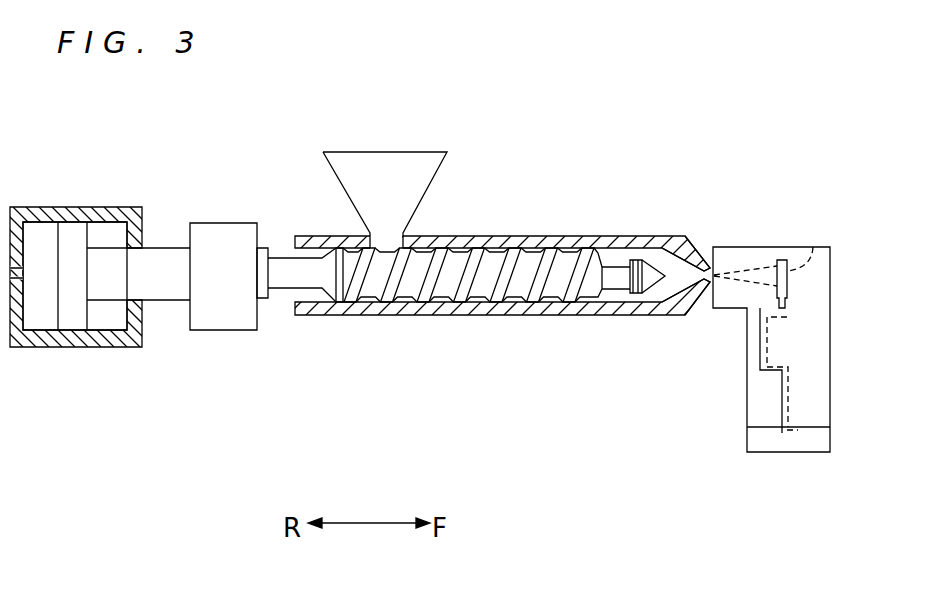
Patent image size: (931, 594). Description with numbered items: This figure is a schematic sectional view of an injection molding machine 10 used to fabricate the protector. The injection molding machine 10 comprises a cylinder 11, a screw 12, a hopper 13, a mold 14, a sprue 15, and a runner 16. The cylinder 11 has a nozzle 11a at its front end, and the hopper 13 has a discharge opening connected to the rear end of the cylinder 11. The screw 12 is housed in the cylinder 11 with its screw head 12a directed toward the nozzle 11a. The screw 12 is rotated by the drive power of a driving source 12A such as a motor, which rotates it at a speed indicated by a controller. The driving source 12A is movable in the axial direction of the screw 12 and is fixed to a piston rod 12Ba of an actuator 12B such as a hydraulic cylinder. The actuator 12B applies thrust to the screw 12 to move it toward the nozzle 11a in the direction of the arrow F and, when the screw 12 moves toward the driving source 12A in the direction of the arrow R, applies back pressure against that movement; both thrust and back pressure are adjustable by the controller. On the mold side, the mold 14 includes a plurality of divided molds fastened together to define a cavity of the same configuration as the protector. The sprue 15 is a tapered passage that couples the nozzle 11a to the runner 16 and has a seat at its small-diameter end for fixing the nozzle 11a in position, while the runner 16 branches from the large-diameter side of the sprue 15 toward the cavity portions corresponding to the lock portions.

The injection molding machine 10 is at (533, 351).
The cylinder 11 is at (563, 236).
The nozzle 11a is at (714, 274).
The screw 12 is at (398, 315).
The screw head 12a is at (648, 284).
The driving source 12A is at (232, 330).
The actuator 12B is at (82, 347).
The piston rod 12Ba is at (168, 247).
The hopper 13 is at (435, 175).
The mold 14 is at (827, 407).
The sprue 15 is at (760, 258).
The runner 16 is at (812, 247).